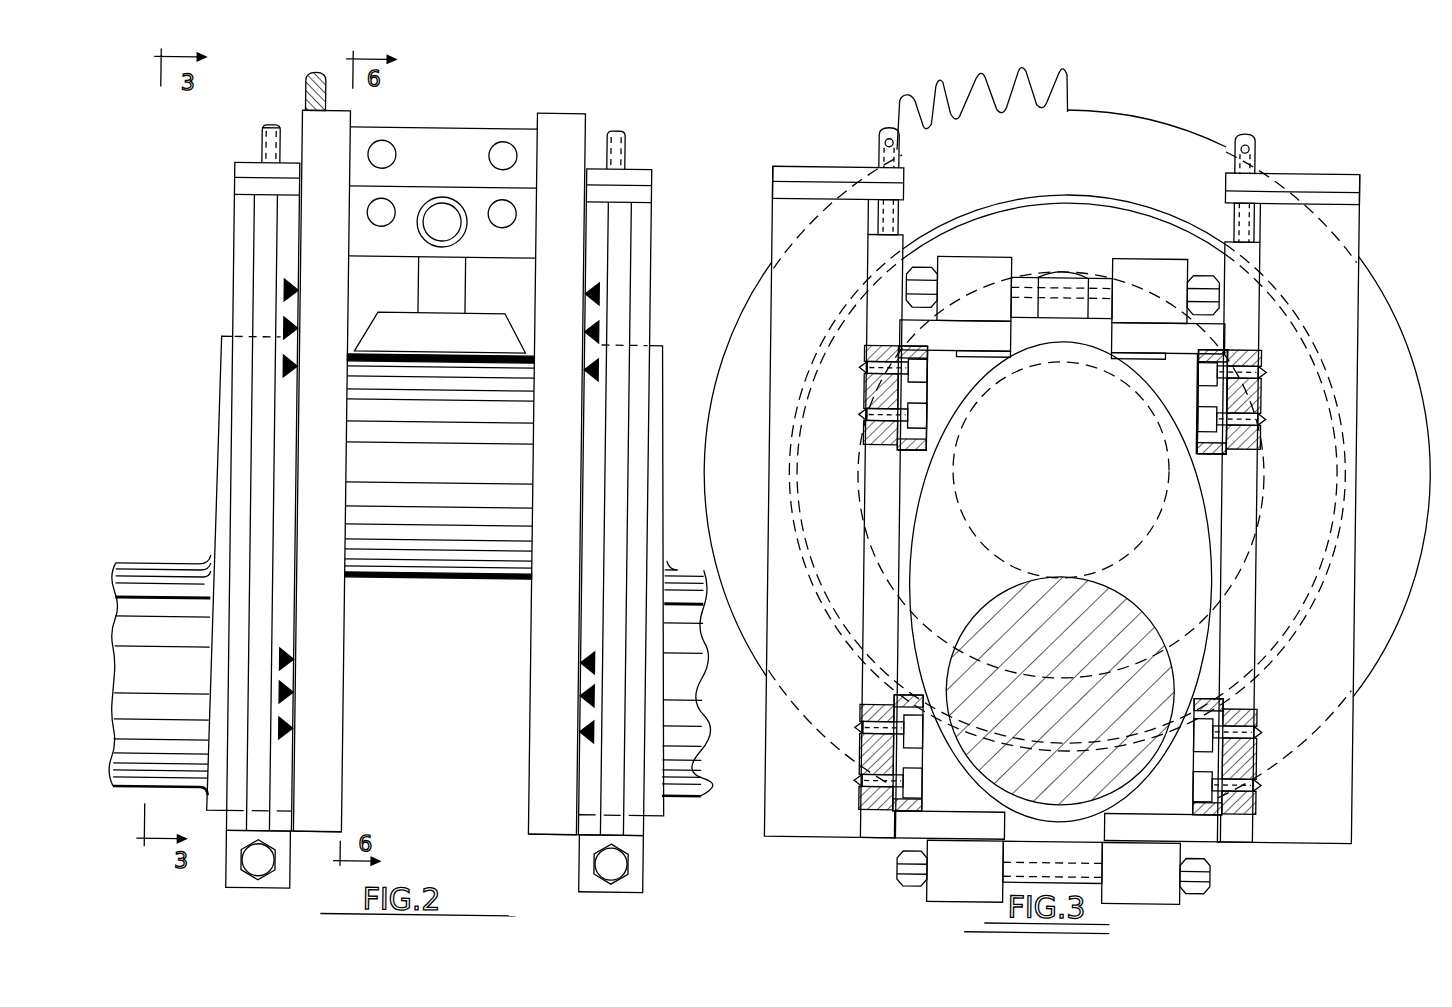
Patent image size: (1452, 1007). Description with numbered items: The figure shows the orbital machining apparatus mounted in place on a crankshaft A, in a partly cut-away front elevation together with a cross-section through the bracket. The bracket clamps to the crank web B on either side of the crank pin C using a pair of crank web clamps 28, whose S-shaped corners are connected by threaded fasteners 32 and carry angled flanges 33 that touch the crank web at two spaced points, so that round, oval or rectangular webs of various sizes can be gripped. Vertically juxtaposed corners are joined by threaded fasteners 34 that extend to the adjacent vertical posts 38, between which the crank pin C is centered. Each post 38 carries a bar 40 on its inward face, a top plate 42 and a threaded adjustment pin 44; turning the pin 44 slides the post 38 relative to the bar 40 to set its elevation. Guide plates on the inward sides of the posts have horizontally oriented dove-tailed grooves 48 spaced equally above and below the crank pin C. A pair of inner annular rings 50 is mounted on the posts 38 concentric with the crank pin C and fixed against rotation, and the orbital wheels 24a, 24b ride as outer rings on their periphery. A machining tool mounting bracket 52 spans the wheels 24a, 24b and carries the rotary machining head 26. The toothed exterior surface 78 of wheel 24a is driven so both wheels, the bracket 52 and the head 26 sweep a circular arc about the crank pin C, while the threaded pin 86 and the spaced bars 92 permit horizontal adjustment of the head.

In FIG. 2, the orbital wheel 24a is at (352, 128).
In FIG. 3, the orbital wheel 24a is at (1378, 322).
In FIG. 2, the orbital wheel 24b is at (577, 124).
In FIG. 2, the rotary machining head 26 is at (475, 328).
In FIG. 3, the crank web clamp 28 is at (937, 889).
In FIG. 3, the threaded fastener 32 is at (1091, 872).
In FIG. 3, the flange 33 is at (1238, 326).
In FIG. 3, the threaded fastener 34 is at (878, 420).
In FIG. 2, the vertical post 38 is at (212, 218).
In FIG. 3, the vertical post 38 is at (760, 218).
In FIG. 3, the bar 40 is at (1234, 492).
In FIG. 2, the top plate 42 is at (650, 172).
In FIG. 3, the top plate 42 is at (792, 178).
In FIG. 2, the threaded adjustment pin 44 is at (262, 130).
In FIG. 3, the threaded adjustment pin 44 is at (1251, 133).
In FIG. 2, the dove-tailed grooves 48 is at (286, 325).
In FIG. 3, the inner annular ring 50 is at (1103, 223).
In FIG. 2, the machining tool mounting bracket 52 is at (503, 128).
In FIG. 2, the toothed exterior surface 78 is at (306, 79).
In FIG. 3, the toothed exterior surface 78 is at (1022, 72).
In FIG. 2, the threaded pin 86 is at (437, 229).
In FIG. 2, the spaced bars 92 is at (392, 153).
In FIG. 2, the crankshaft A is at (143, 586).
In FIG. 2, the crank web B is at (222, 530).
In FIG. 2, the crank pin C is at (388, 553).